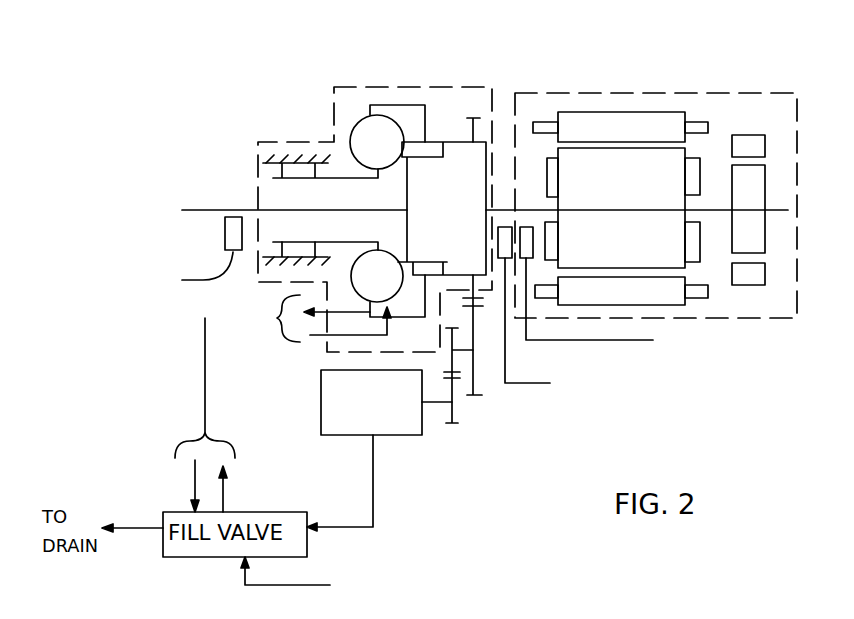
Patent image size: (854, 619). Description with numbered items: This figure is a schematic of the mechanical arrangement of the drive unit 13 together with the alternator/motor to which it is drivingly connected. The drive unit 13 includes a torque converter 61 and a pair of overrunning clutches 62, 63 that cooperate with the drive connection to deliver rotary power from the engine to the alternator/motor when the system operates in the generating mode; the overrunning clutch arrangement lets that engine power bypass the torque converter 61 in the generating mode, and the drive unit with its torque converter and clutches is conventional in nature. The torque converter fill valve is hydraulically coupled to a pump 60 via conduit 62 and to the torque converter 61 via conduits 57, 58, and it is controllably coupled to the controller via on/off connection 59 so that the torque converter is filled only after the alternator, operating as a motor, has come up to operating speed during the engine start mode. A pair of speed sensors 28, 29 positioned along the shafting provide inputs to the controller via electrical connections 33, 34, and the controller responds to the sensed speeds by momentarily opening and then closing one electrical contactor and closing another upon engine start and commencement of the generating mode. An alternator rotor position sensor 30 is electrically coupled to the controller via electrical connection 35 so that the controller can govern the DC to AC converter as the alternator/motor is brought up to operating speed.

The drive unit 13 is at (392, 87).
The speed sensor 28 is at (225, 230).
The speed sensor 29 is at (502, 241).
The alternator rotor position sensor 30 is at (527, 242).
The electrical connection 33 is at (203, 282).
The electrical connection 34 is at (523, 385).
The electrical connection 35 is at (615, 340).
The conduit 57 is at (225, 493).
The conduit 58 is at (195, 473).
The on/off connection 59 is at (260, 586).
The pump 60 is at (400, 435).
The torque converter 61 is at (367, 142).
The overrunning clutch 62 is at (295, 248).
The overrunning clutch 63 is at (428, 215).